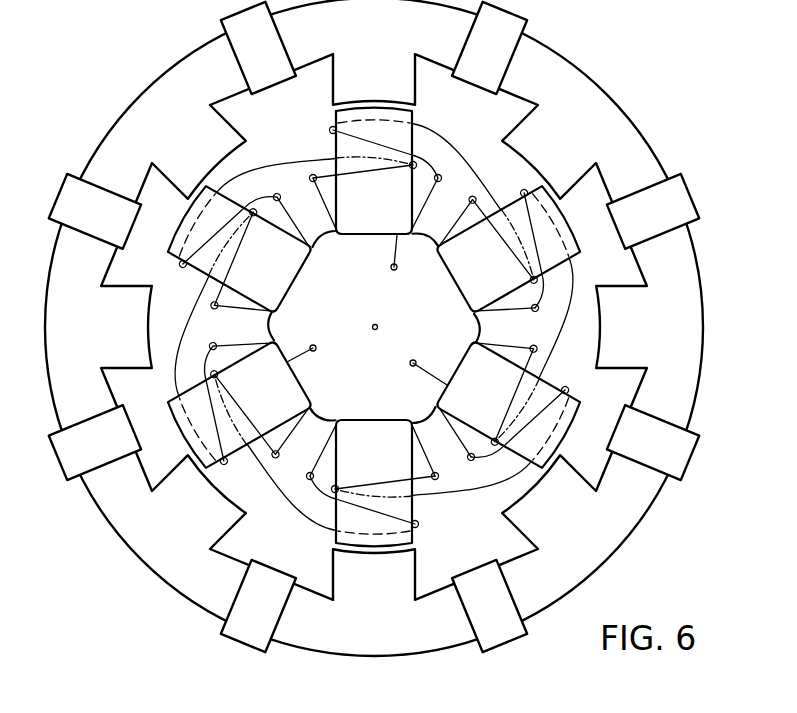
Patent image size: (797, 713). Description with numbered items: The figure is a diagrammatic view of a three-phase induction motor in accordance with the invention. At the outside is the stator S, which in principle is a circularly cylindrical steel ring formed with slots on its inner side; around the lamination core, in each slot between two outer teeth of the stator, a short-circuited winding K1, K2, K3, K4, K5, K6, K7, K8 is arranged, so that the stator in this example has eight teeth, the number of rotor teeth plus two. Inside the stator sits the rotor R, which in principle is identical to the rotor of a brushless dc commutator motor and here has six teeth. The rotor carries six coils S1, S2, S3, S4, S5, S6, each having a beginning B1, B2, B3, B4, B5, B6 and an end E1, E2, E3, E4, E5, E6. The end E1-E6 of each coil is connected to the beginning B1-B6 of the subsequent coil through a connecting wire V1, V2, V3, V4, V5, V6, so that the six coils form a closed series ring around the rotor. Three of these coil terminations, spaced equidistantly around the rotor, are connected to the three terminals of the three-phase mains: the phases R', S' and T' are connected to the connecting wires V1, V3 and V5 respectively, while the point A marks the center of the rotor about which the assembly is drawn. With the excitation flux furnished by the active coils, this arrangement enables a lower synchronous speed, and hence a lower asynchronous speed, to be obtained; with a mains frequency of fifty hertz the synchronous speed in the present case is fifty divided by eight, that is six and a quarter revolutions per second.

The stator S is at (374, 328).
The rotor R is at (500, 338).
The short-circuited winding K1 is at (281, 33).
The short-circuited winding K2 is at (515, 50).
The short-circuited winding K3 is at (670, 232).
The short-circuited winding K4 is at (643, 473).
The short-circuited winding K5 is at (466, 613).
The short-circuited winding K6 is at (277, 623).
The short-circuited winding K7 is at (118, 459).
The short-circuited winding K8 is at (92, 237).
The connecting wire V1 is at (379, 235).
The connecting wire V2 is at (456, 286).
The connecting wire V3 is at (461, 362).
The connecting wire V4 is at (381, 417).
The connecting wire V5 is at (294, 375).
The connecting wire V6 is at (292, 283).
The rotor coil S1 is at (267, 173).
The rotor coil S2 is at (464, 165).
The rotor coil S3 is at (569, 302).
The rotor coil S4 is at (505, 477).
The rotor coil S5 is at (283, 490).
The rotor coil S6 is at (190, 333).
The coil end E1 is at (313, 175).
The coil end E2 is at (477, 200).
The coil end E3 is at (537, 351).
The coil end E4 is at (438, 480).
The coil end E5 is at (273, 456).
The coil end E6 is at (210, 304).
The coil beginning B1 is at (279, 198).
The coil beginning B2 is at (442, 181).
The coil beginning B3 is at (534, 312).
The coil beginning B4 is at (468, 460).
The coil beginning B5 is at (307, 476).
The coil beginning B6 is at (213, 343).
The three-phase mains terminal R' is at (387, 268).
The three-phase mains terminal S' is at (418, 359).
The three-phase mains terminal T' is at (318, 343).
The rotor axis A is at (378, 324).